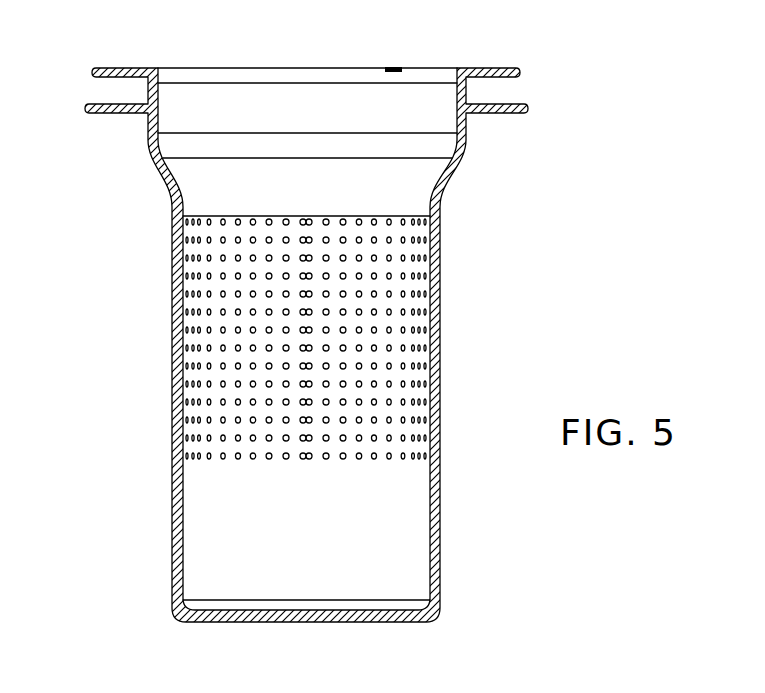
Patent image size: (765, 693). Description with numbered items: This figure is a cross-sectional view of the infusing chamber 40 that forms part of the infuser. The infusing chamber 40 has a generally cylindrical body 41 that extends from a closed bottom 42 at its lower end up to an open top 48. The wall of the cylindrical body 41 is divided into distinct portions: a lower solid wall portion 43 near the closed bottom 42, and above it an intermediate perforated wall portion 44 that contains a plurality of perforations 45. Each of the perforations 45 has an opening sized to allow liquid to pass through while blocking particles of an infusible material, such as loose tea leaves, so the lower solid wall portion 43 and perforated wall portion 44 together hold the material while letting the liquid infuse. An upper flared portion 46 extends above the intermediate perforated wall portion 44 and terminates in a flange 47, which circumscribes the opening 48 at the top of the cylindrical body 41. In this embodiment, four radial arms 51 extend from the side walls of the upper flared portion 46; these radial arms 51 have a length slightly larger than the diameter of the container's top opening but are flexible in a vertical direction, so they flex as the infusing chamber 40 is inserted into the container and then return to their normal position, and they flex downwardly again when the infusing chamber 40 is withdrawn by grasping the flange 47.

The infusing chamber 40 is at (310, 336).
The cylindrical body 41 is at (182, 427).
The closed bottom 42 is at (387, 621).
The lower solid wall portion 43 is at (450, 462).
The intermediate perforated wall portion 44 is at (306, 337).
The perforations 45 is at (223, 365).
The upper flared portion 46 is at (550, 68).
The flange 47 is at (115, 67).
The open top 48 is at (422, 67).
The radial arms 51 is at (113, 114).